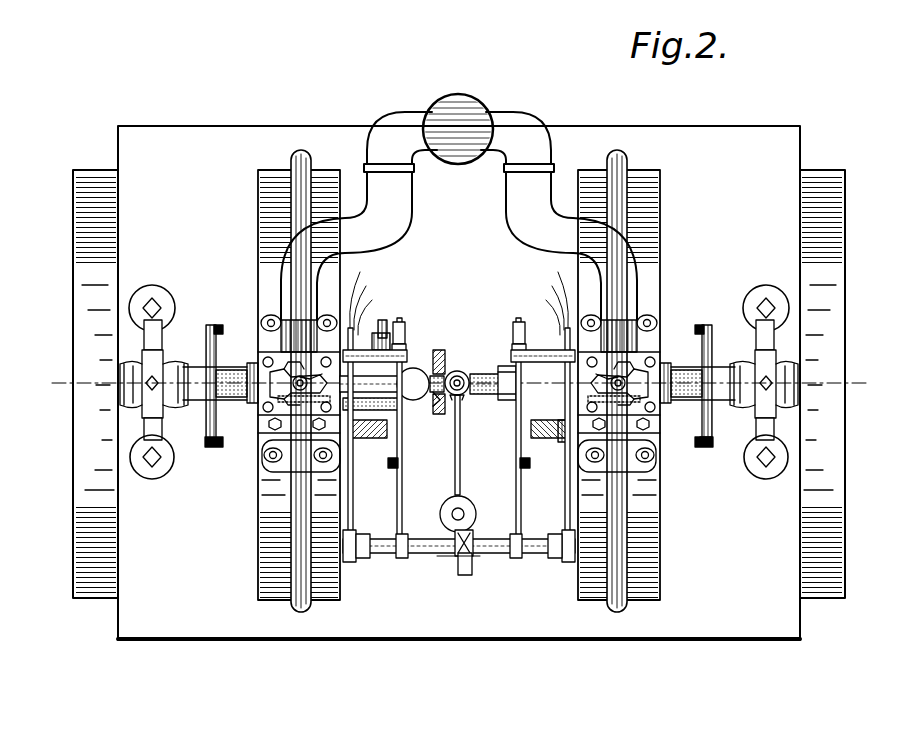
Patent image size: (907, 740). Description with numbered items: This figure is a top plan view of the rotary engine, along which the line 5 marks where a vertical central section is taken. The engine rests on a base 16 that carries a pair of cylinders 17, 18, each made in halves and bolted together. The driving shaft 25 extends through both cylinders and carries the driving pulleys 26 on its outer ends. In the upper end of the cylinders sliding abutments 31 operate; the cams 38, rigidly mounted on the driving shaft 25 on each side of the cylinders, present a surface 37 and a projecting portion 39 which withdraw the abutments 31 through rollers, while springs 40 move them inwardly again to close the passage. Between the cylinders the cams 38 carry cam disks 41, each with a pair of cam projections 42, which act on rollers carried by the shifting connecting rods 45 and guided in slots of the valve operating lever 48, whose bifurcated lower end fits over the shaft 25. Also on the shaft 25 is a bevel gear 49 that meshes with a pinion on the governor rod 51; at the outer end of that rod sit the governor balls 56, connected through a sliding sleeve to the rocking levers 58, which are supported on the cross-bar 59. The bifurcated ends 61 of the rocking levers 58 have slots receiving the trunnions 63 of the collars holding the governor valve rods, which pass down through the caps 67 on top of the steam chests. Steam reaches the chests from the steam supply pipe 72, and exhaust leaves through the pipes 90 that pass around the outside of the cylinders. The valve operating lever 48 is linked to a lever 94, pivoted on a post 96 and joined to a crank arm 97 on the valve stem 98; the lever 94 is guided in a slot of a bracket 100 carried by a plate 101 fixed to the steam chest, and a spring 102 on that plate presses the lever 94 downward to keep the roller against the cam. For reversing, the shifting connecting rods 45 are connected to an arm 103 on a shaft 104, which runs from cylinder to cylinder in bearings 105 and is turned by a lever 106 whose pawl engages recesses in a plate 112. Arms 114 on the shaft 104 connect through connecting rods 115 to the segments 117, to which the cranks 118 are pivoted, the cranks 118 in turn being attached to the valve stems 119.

The section line 5— 5 is at (456, 385).
The base 16 is at (172, 158).
The cylinder 17 is at (312, 168).
The cylinder 18 is at (632, 168).
The driving shaft 25 is at (479, 374).
The driving pulleys 26 is at (92, 372).
The sliding abutments 31 is at (233, 401).
The cam surface 37 is at (700, 435).
The cams 38 is at (206, 354).
The projecting portion 39 is at (217, 326).
The springs 40 is at (301, 154).
The cam disks 41 is at (520, 346).
The cam projections 42 is at (459, 326).
The shifting connecting rods 45 is at (440, 514).
The valve operating lever 48 is at (470, 393).
The bevel gear 49 is at (447, 400).
The governor rod 51 is at (454, 410).
The governor balls 56 is at (413, 384).
The rocking levers 58 is at (309, 384).
The cross-bar 59 is at (439, 370).
The bifurcated ends 61 is at (289, 385).
The trunnions 63 is at (458, 363).
The caps 67 is at (461, 394).
The steam supply pipe 72 is at (459, 216).
The pipes 90 is at (616, 158).
The lever 94 is at (388, 463).
The post 96 is at (378, 360).
The crank arm 97 is at (432, 402).
The valve stem 98 is at (582, 379).
The bracket 100 is at (505, 400).
The plate 101 is at (459, 399).
The spring 102 is at (518, 420).
The arm 103 is at (405, 556).
The shaft 104 is at (440, 557).
The bearings 105 is at (349, 562).
The lever 106 is at (455, 556).
The plate 112 is at (466, 575).
The arms 114 is at (360, 534).
The connecting rods 115 is at (353, 487).
The segments 117 is at (459, 309).
The cranks 118 is at (441, 382).
The valve stems 119 is at (459, 365).